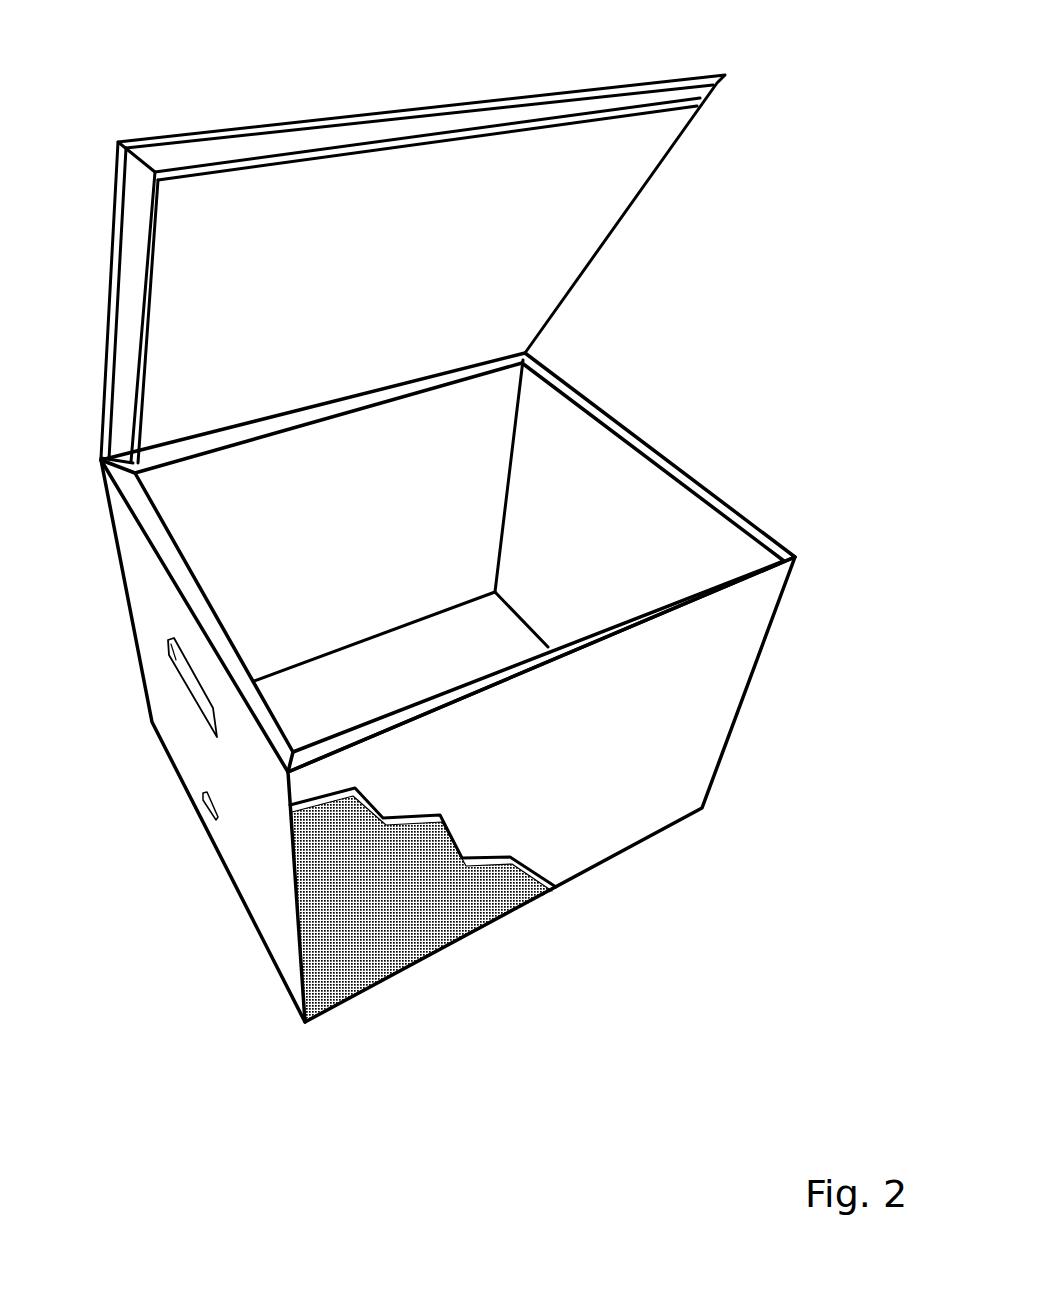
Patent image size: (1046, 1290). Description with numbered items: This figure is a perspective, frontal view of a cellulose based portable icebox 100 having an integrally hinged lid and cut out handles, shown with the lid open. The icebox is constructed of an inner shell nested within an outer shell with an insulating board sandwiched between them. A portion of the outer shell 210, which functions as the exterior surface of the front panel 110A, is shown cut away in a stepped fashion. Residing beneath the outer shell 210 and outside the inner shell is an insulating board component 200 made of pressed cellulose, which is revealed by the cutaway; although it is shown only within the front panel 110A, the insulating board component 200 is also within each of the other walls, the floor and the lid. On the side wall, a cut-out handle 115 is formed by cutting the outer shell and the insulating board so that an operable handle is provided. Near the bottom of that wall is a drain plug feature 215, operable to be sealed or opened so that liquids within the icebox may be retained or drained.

The cellulose based portable icebox 100 is at (840, 31).
The front panel 110A is at (607, 786).
The cut-out handle 115 is at (168, 640).
The insulating board component 200 is at (373, 950).
The outer shell 210 is at (535, 875).
The drain plug feature 215 is at (203, 795).